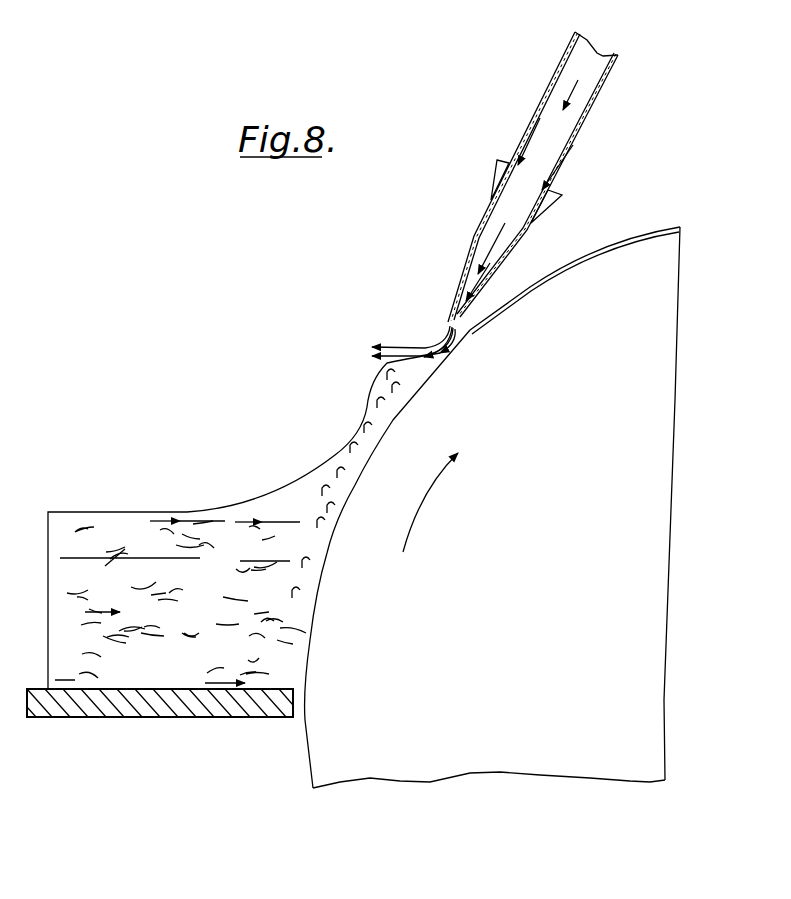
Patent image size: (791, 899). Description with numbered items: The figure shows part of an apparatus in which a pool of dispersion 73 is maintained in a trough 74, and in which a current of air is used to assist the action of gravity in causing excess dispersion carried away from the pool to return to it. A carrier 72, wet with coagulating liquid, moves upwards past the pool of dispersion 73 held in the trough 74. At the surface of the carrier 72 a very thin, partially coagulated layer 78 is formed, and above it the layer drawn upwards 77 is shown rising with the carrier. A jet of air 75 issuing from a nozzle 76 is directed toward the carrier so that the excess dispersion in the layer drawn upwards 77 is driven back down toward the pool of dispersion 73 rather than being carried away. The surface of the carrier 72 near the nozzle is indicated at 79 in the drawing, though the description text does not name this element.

The carrier 72 is at (305, 700).
The pool of dispersion 73 is at (97, 512).
The trough 74 is at (110, 717).
The jet of air 75 is at (425, 343).
The nozzle 76 is at (493, 177).
The layer drawn upwards 77 is at (384, 420).
The very thin, partially coagulated layer 78 is at (312, 606).
The upper body surface 79 is at (597, 252).